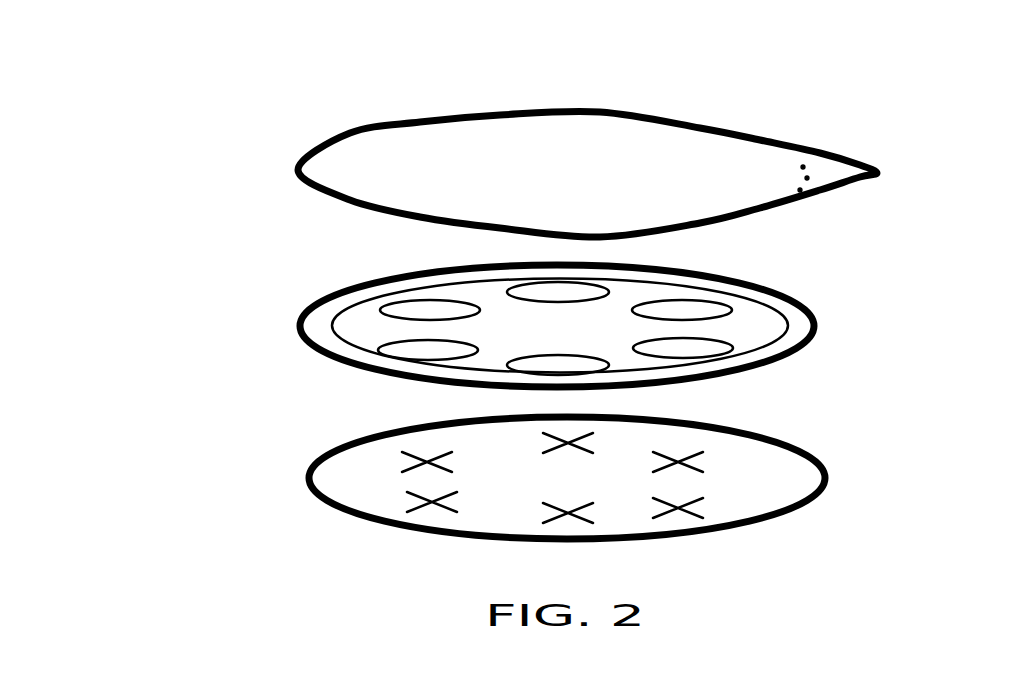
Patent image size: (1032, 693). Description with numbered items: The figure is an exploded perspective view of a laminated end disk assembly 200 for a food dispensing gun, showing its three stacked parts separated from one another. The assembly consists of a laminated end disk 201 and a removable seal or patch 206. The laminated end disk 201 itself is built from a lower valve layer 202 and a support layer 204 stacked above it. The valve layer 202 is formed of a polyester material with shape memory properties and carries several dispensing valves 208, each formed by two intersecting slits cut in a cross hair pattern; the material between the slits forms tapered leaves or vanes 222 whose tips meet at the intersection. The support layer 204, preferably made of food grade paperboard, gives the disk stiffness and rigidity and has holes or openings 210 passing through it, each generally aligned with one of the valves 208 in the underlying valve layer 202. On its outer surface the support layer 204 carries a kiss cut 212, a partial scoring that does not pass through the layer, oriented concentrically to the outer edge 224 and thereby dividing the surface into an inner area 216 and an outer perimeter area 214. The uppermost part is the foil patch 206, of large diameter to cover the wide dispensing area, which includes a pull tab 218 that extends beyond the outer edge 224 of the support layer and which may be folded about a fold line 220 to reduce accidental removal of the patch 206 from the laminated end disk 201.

The laminated end disk assembly 200 is at (185, 63).
The laminated end disk 201 is at (828, 268).
The valve layer 202 is at (432, 557).
The support layer 204 is at (685, 389).
The removable seal or patch 206 is at (393, 100).
The dispensing valves 208 is at (667, 513).
The holes or openings 210 is at (673, 312).
The kiss cut 212 is at (377, 293).
The outer perimeter area 214 is at (322, 325).
The inner area 216 is at (375, 328).
The pull tab 218 is at (822, 178).
The fold line 220 is at (805, 180).
The leaves or vanes 222 is at (697, 506).
The outer edge 224 is at (335, 312).